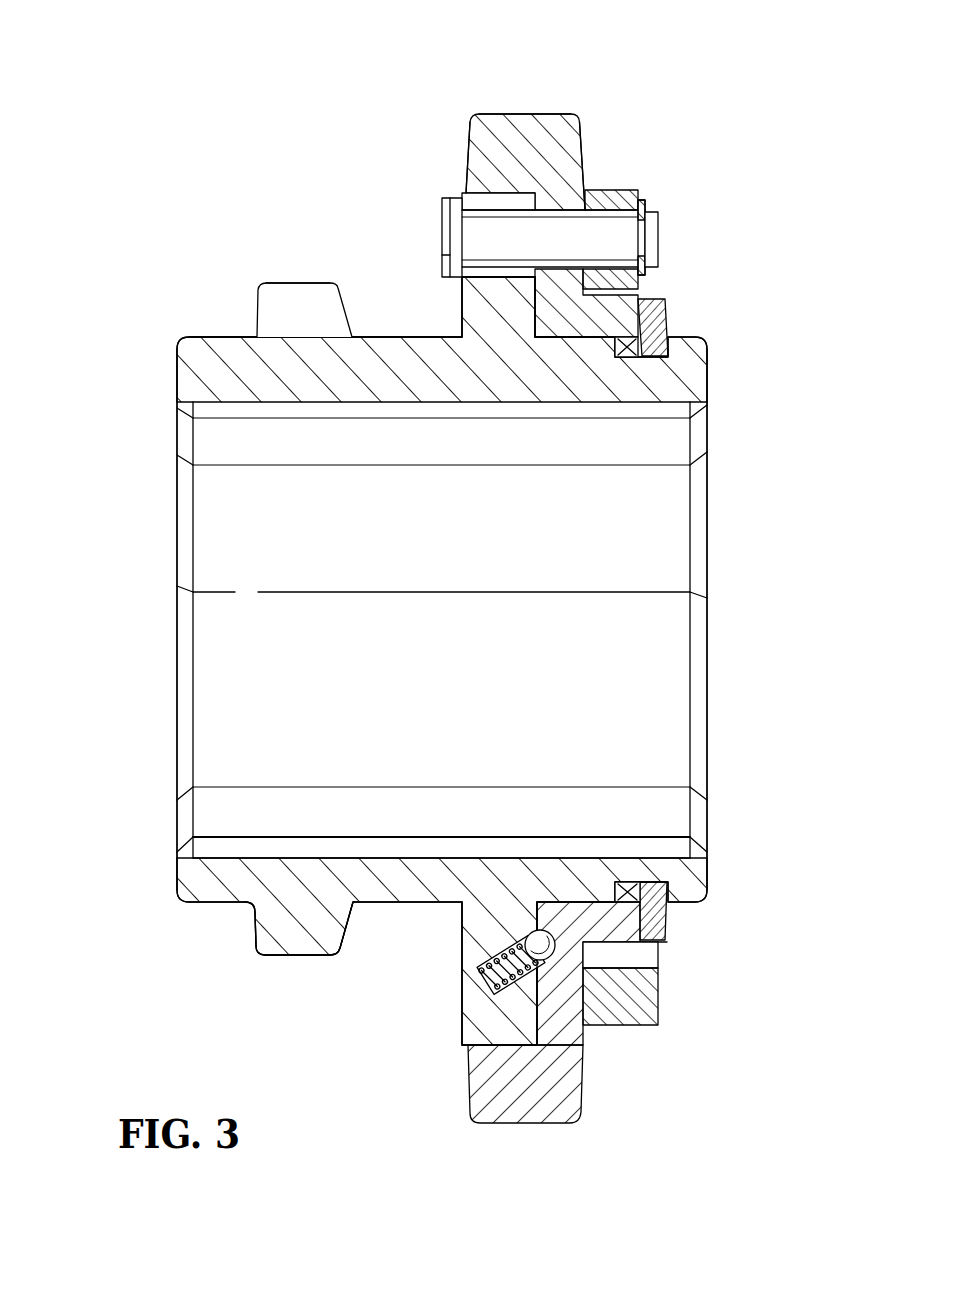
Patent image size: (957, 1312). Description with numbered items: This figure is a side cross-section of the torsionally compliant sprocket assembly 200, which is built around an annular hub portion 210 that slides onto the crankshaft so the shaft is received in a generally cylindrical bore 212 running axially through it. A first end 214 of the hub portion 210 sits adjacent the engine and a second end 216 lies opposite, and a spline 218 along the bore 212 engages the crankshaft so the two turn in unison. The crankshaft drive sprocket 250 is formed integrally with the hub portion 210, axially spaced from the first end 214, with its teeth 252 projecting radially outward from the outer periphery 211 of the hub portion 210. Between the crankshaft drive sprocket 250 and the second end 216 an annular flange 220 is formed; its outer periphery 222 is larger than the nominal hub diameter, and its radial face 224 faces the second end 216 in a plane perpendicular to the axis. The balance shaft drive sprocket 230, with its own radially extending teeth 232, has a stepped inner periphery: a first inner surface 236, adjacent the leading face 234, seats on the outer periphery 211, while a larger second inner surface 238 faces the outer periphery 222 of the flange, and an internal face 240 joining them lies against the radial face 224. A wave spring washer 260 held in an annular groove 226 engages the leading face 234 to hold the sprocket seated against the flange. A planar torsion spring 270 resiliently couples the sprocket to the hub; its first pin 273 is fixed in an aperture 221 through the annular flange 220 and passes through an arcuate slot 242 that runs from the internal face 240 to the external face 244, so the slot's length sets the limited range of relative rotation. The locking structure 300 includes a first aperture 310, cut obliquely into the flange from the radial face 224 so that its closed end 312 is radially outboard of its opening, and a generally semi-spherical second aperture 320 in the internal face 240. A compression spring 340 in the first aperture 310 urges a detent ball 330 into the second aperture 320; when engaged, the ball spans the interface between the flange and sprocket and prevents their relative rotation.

The torsionally compliant sprocket assembly 200 is at (118, 205).
The hub portion 210 is at (168, 548).
The outer periphery 211 is at (195, 337).
The generally cylindrical bore 212 is at (267, 848).
The first end 214 is at (177, 370).
The second end 216 is at (709, 385).
The spline 218 is at (378, 858).
The annular flange 220 is at (462, 320).
The aperture 221 is at (462, 280).
The outer periphery 222 is at (470, 197).
The radial face 224 is at (520, 296).
The annular groove 226 is at (643, 357).
The balance shaft drive sprocket 230 is at (463, 109).
The teeth 232 is at (546, 114).
The leading face 234 is at (600, 338).
The first inner surface 236 is at (533, 296).
The second inner surface 238 is at (492, 198).
The internal face 240 is at (540, 305).
The arcuate slot 242 is at (560, 205).
The external face 244 is at (580, 120).
The crankshaft drive sprocket 250 is at (243, 280).
The teeth 252 is at (300, 283).
The wave spring washer 260 is at (662, 322).
The planar torsion spring 270 is at (641, 198).
The first pin 273 is at (658, 232).
The locking structure 300 is at (491, 1017).
The first aperture 310 is at (470, 950).
The closed end 312 is at (484, 990).
The second aperture 320 is at (554, 940).
The detent ball 330 is at (525, 932).
The compression spring 340 is at (478, 972).